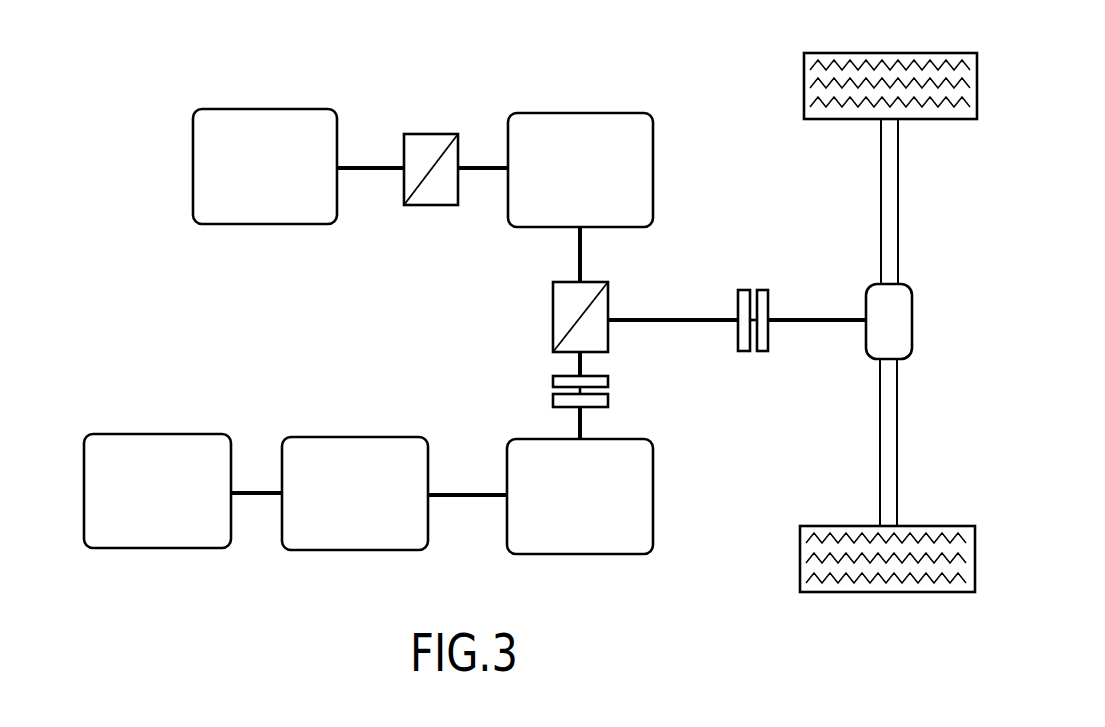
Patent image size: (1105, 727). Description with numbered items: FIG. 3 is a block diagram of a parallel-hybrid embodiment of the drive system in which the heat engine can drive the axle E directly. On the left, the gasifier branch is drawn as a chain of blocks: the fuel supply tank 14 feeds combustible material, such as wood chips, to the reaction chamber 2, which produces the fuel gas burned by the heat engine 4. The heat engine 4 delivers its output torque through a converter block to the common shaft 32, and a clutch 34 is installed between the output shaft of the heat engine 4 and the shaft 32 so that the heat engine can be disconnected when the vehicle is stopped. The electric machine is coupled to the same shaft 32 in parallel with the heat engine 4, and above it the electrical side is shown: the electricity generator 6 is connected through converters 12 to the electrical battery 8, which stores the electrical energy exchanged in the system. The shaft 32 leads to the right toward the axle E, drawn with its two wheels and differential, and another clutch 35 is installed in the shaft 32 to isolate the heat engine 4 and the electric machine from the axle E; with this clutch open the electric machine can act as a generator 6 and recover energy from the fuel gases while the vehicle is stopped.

The reaction chamber 2 is at (352, 450).
The heat engine 4 is at (640, 468).
The electricity generator 6 is at (610, 133).
The electrical battery 8 is at (238, 127).
The converters 12 is at (428, 135).
The fuel supply tank 14 is at (153, 450).
The shaft 32 is at (688, 310).
The clutch 34 is at (553, 402).
The clutch 35 is at (762, 298).
The axle E is at (892, 172).